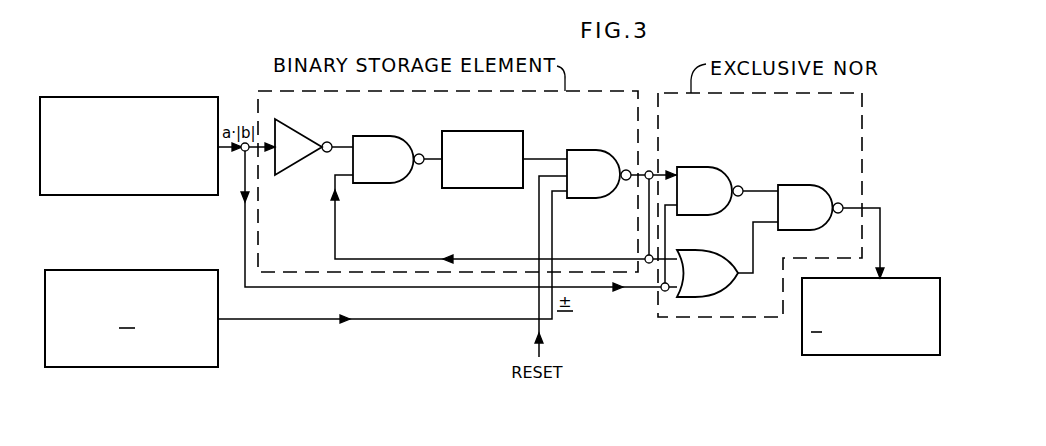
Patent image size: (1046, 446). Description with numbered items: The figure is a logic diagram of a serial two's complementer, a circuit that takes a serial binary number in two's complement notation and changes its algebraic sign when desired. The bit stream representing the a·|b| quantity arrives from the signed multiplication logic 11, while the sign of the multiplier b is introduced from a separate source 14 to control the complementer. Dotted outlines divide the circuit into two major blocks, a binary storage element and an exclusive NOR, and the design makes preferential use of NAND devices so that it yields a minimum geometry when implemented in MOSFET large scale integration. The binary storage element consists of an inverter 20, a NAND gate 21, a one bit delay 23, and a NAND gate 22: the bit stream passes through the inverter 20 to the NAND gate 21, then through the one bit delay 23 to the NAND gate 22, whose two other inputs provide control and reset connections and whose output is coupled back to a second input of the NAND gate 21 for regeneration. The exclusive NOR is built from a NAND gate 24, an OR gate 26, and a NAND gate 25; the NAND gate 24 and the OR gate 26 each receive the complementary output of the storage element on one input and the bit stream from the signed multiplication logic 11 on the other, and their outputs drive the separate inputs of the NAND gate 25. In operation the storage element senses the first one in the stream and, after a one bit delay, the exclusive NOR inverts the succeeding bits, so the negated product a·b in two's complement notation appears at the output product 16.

The signed multiplication logic 11 is at (138, 97).
The separate source 14 is at (148, 270).
The output product 16 is at (919, 278).
The inverter 20 is at (297, 128).
The NAND gate 21 is at (388, 136).
The NAND gate 22 is at (601, 150).
The one bit delay 23 is at (482, 131).
The NAND gate 24 is at (710, 167).
The NAND gate 25 is at (815, 185).
The OR gate 26 is at (698, 250).